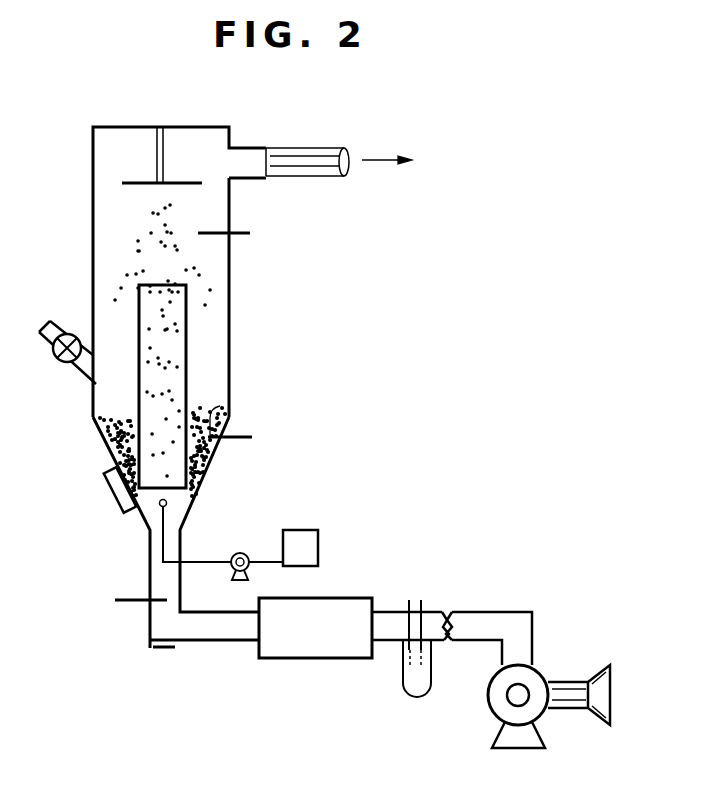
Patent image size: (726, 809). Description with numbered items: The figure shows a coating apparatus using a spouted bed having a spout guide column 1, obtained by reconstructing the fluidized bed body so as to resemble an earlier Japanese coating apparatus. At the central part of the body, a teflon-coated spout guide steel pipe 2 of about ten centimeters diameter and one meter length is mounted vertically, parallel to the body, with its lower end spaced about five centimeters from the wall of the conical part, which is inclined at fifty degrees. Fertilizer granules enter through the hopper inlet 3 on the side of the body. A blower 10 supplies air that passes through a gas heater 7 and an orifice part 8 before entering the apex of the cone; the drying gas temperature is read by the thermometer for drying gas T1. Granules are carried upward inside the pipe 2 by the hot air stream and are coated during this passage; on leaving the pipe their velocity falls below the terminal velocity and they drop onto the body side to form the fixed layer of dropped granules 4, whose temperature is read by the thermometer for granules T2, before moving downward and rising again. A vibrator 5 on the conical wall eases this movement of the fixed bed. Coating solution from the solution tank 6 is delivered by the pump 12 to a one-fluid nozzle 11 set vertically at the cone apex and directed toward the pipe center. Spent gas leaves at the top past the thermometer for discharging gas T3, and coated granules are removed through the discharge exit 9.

The coating apparatus using spouted bed having a spout guide column 1 is at (93, 215).
The spout guide steel pipe 2 is at (187, 347).
The hopper inlet of fertilizer granules 3 is at (82, 368).
The fixed layer of dropped granules 4 is at (220, 406).
The vibrator 5 is at (118, 500).
The solution tank 6 is at (310, 530).
The gas heater 7 is at (291, 658).
The orifice part 8 is at (407, 688).
The discharge exit 9 is at (157, 650).
The blower 10 is at (535, 678).
The nozzle 11 is at (185, 512).
The pump 12 is at (240, 553).
The thermometer for drying gas T1 is at (126, 598).
The thermometer for granules T2 is at (252, 436).
The thermometer for discharging gas T3 is at (246, 232).